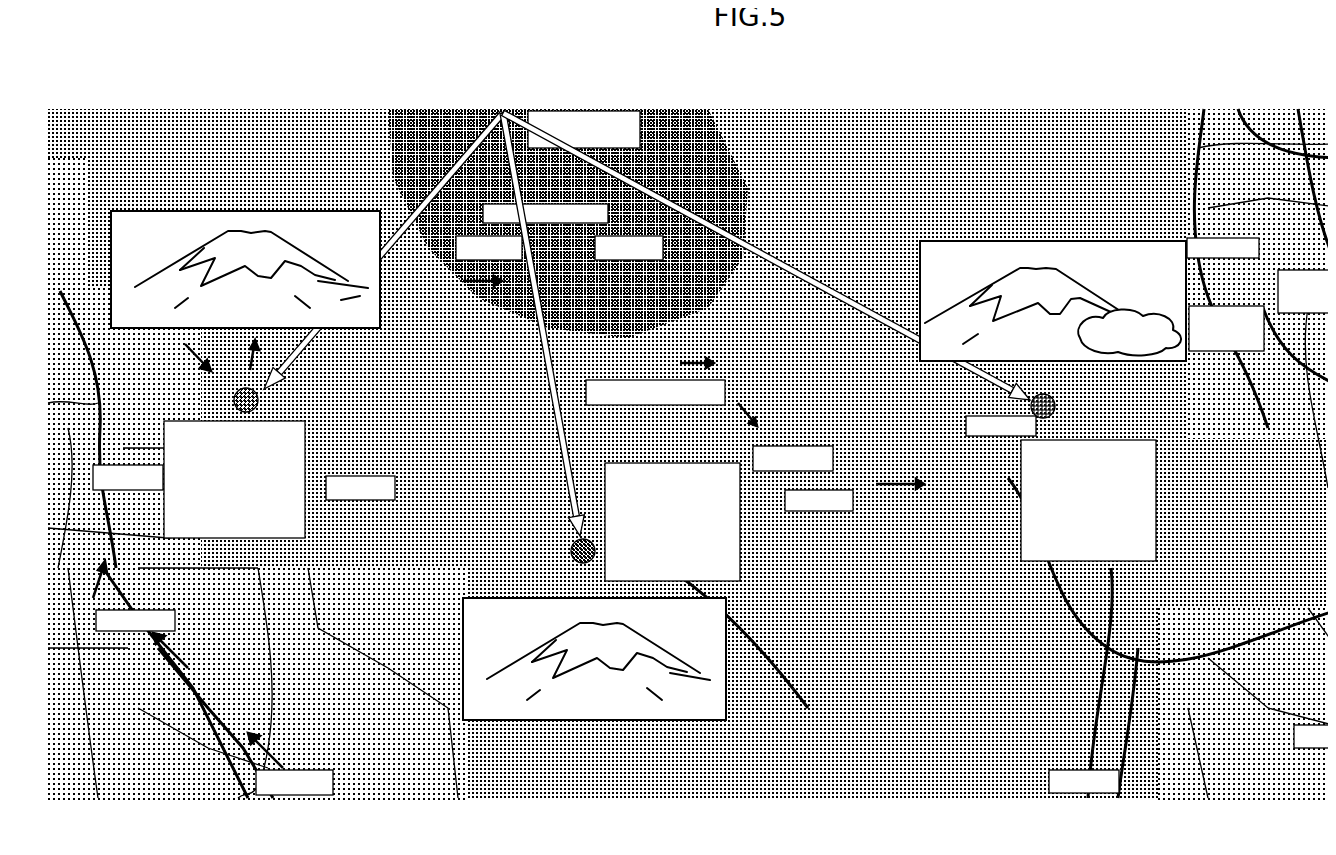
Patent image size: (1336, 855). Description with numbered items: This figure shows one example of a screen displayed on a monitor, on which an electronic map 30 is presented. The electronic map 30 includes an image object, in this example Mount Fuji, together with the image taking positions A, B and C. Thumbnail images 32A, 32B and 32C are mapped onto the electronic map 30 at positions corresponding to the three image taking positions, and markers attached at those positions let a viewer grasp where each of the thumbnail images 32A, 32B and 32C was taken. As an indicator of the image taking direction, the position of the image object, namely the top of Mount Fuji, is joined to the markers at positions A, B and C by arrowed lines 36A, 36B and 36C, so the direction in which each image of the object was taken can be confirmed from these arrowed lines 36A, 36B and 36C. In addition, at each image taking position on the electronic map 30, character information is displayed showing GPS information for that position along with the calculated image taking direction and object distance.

The electronic map 30 is at (890, 88).
The thumbnail image 32A is at (253, 203).
The thumbnail image 32B is at (566, 712).
The thumbnail image 32C is at (1000, 233).
The arrowed line 36A is at (424, 190).
The arrowed line 36B is at (514, 102).
The arrowed line 36C is at (686, 208).